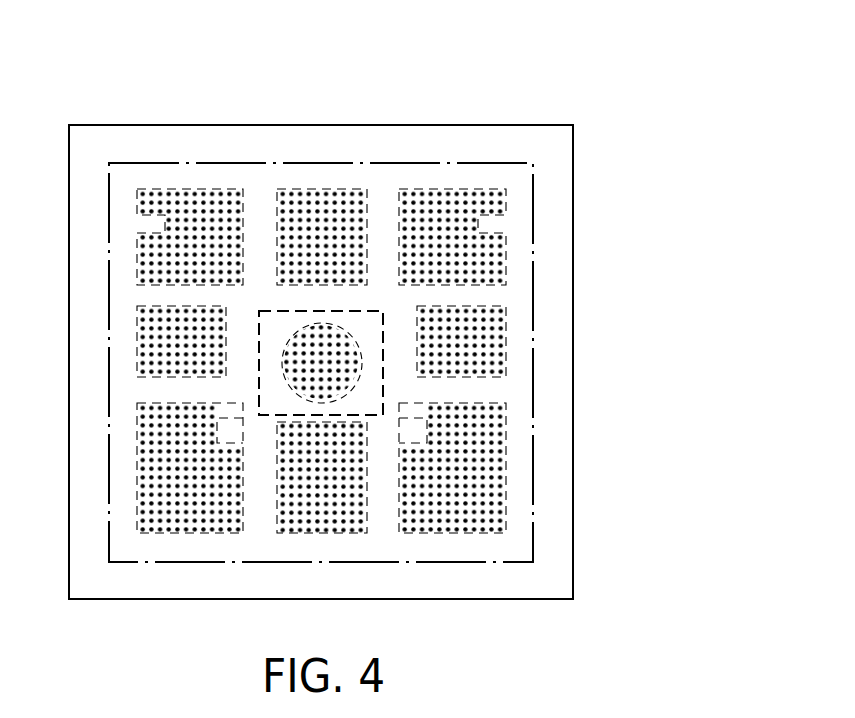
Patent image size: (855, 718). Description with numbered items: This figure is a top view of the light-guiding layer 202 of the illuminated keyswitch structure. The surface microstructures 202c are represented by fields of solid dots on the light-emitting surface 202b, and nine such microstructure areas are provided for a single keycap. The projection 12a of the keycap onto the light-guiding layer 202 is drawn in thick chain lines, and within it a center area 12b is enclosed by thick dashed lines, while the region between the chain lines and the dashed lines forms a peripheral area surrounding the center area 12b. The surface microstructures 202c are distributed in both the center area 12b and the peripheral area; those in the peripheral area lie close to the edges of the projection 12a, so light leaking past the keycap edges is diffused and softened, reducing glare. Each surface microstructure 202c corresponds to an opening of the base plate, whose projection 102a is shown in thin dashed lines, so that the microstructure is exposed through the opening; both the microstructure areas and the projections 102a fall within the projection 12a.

The light-guiding layer 202 is at (556, 80).
The light-emitting surface 202b is at (511, 158).
The surface microstructure 202c is at (316, 197).
The projection of the opening profile 102a is at (286, 340).
The projection of the keycap 12a is at (537, 297).
The center area 12b is at (385, 345).